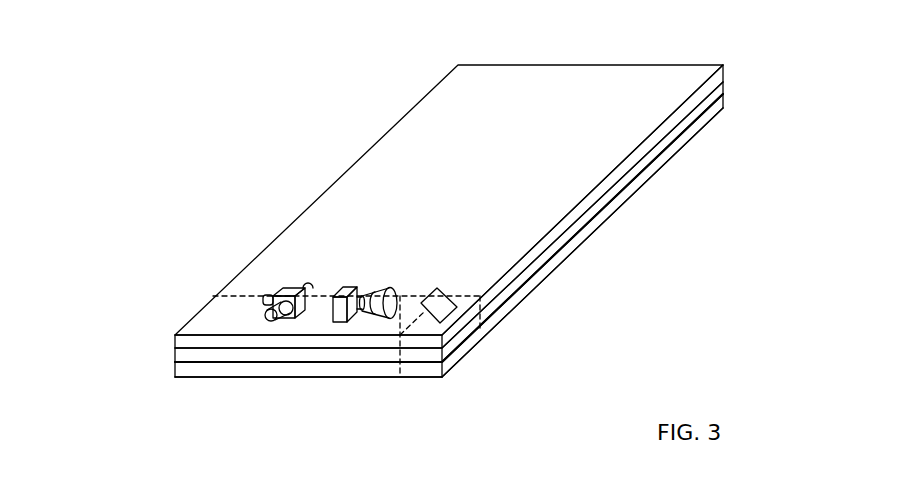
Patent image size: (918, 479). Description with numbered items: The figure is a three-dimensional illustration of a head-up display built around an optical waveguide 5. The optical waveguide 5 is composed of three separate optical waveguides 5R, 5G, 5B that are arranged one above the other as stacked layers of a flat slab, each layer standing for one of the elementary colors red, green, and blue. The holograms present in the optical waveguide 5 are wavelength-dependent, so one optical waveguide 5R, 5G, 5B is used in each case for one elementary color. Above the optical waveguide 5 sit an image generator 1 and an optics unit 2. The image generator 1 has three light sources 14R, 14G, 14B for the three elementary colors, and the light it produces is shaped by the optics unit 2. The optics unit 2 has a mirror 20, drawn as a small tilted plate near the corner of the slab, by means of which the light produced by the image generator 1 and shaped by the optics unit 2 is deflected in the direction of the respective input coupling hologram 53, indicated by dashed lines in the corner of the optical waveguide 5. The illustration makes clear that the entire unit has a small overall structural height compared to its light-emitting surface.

The optical waveguide 5 is at (197, 307).
The optical waveguide for red 5R is at (177, 337).
The optical waveguide for green 5G is at (178, 355).
The optical waveguide for blue 5B is at (183, 372).
The image generator 1 is at (292, 287).
The optics unit 2 is at (362, 285).
The light source for blue 14B is at (268, 297).
The light source for green 14G is at (272, 320).
The light source for red 14R is at (310, 292).
The mirror 20 is at (453, 295).
The input coupling hologram 53 is at (433, 329).